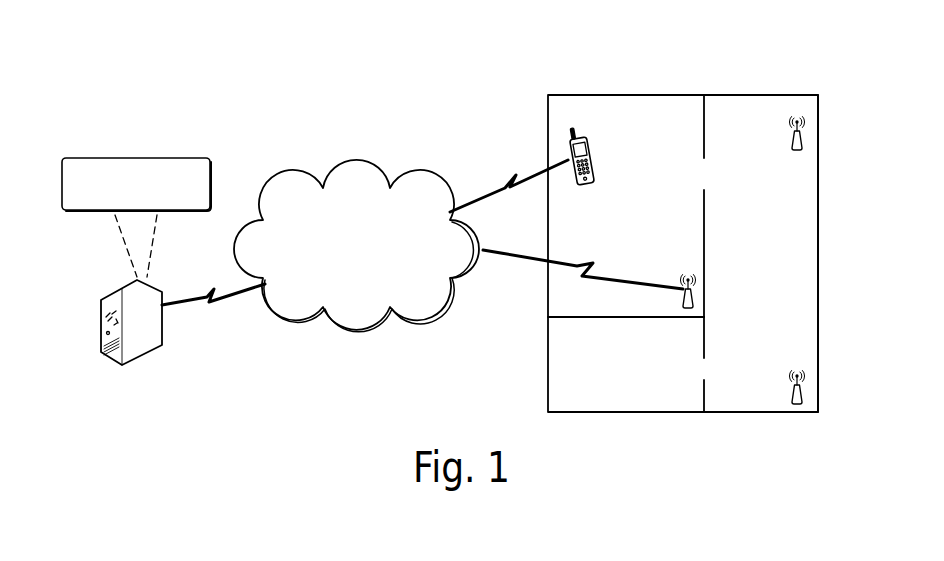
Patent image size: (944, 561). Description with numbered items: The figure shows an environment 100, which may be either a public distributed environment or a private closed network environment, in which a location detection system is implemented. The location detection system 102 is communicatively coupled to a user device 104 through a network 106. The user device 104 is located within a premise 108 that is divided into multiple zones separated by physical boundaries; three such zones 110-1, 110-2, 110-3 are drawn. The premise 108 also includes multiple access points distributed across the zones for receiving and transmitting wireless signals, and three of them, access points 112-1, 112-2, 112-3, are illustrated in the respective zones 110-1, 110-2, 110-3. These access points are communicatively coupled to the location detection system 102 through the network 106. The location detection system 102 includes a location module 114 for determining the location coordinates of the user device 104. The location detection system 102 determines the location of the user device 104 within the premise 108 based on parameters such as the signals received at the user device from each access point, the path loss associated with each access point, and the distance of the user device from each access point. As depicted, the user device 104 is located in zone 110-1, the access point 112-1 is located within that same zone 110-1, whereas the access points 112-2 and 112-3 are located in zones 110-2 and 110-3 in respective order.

The environment 100 is at (424, 50).
The location detection system 102 is at (125, 286).
The user device 104 is at (568, 152).
The network 106 is at (402, 260).
The premise 108 is at (620, 93).
The zone 110-1 is at (673, 105).
The zone 110-2 is at (560, 363).
The zone 110-3 is at (795, 245).
The access point 112-1 is at (683, 297).
The access point 112-2 is at (791, 392).
The access point 112-3 is at (792, 140).
The location module 114 is at (202, 190).